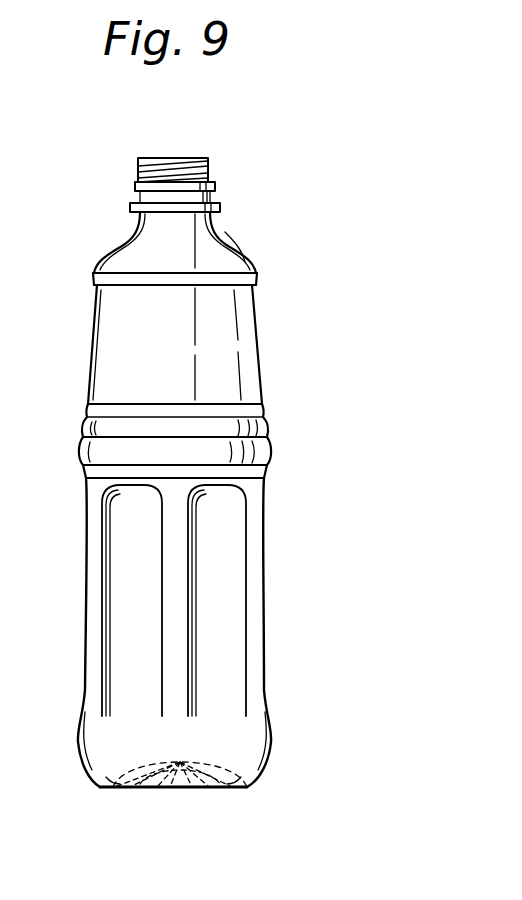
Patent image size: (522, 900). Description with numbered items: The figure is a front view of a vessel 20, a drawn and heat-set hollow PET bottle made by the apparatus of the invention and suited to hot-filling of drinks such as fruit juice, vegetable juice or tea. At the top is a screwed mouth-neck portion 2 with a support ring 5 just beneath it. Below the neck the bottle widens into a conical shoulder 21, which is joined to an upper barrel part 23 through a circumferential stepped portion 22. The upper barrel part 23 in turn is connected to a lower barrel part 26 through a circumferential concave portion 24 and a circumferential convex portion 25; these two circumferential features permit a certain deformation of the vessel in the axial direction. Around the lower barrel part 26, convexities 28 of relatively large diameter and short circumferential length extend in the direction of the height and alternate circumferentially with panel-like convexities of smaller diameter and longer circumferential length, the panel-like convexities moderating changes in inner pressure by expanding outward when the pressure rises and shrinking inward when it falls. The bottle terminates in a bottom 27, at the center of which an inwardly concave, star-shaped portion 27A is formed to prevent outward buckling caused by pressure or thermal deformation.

The screwed mouth-neck portion 2 is at (212, 184).
The support ring 5 is at (130, 205).
The vessel 20 is at (280, 237).
The conical shoulder 21 is at (122, 237).
The circumferential stepped portion 22 is at (258, 283).
The upper barrel part 23 is at (88, 353).
The circumferential concave portion 24 is at (258, 422).
The circumferential convex portion 25 is at (273, 455).
The lower barrel part 26 is at (268, 695).
The bottom 27 is at (242, 790).
The inwardly concave star-shaped portion 27A is at (157, 790).
The convexities 28 is at (177, 622).